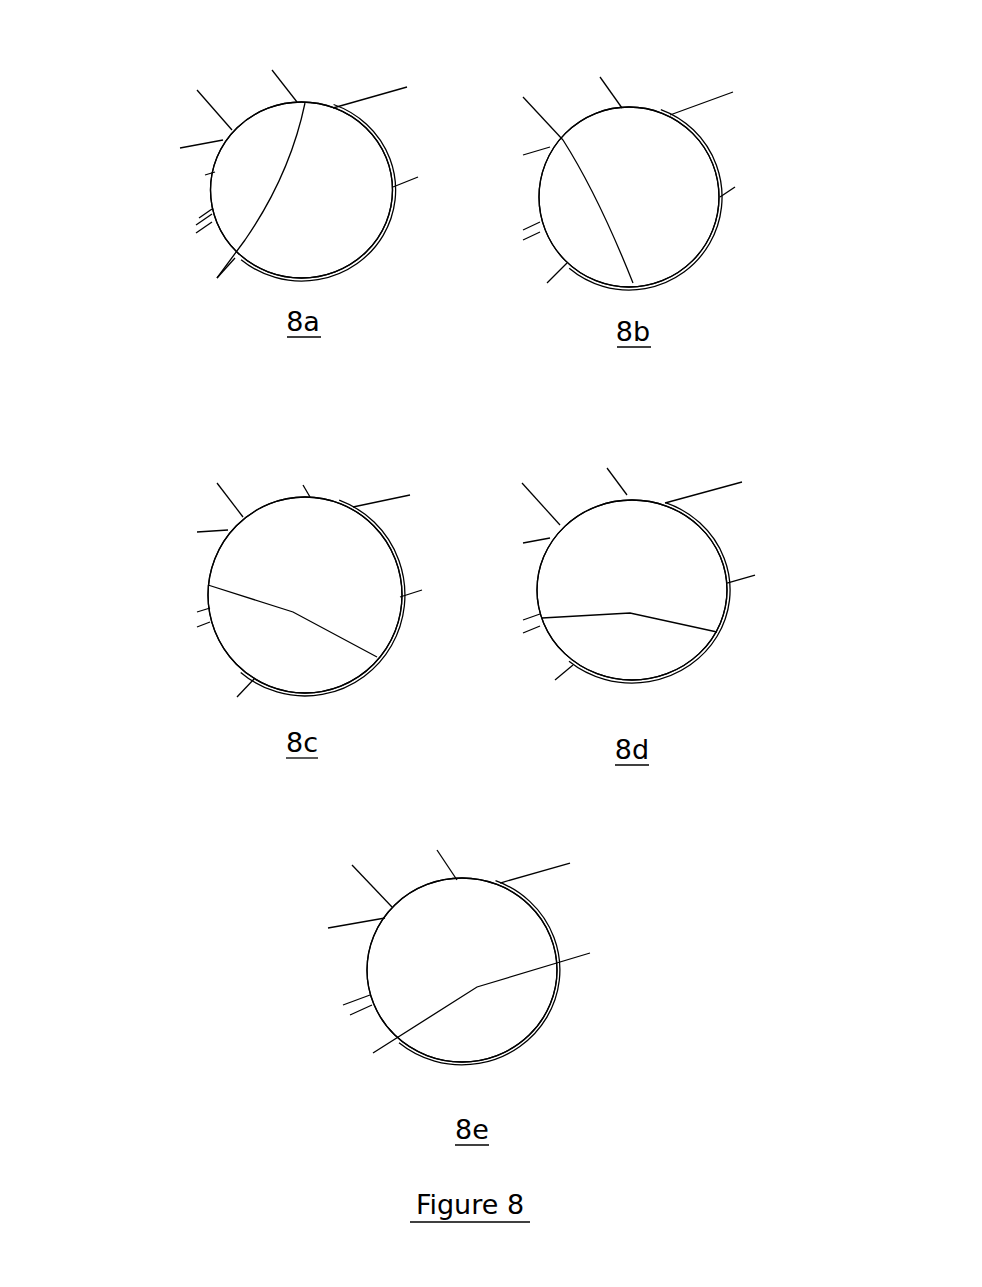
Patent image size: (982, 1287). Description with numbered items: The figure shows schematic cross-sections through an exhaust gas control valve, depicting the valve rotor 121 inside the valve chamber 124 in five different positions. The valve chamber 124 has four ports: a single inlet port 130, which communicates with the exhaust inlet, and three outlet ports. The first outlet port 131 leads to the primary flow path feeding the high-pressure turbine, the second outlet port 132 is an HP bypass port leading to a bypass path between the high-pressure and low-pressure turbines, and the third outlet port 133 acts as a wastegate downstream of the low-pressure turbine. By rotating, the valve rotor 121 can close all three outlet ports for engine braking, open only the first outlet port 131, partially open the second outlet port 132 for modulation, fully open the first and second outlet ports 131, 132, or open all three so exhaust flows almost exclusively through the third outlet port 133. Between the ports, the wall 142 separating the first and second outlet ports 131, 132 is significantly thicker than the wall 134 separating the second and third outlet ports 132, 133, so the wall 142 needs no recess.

The valve rotor 121 is at (462, 578).
The valve chamber 124 is at (467, 582).
The inlet port 130 is at (373, 130).
The first outlet port 131 is at (246, 108).
The second outlet port 132 is at (205, 175).
The third outlet port 133 is at (216, 238).
The wall 134 is at (196, 222).
The wall 142 is at (227, 133).